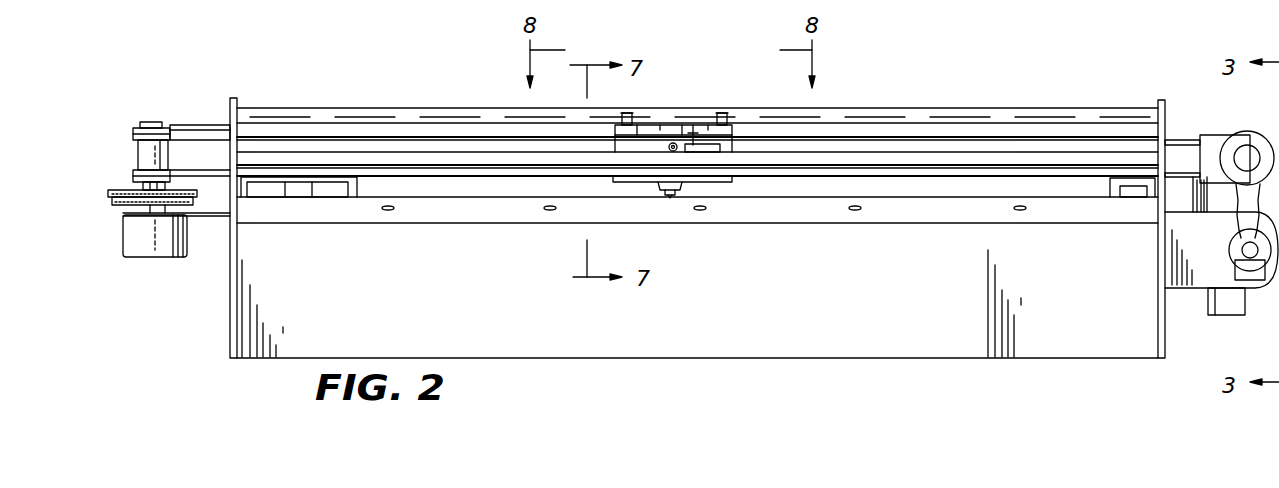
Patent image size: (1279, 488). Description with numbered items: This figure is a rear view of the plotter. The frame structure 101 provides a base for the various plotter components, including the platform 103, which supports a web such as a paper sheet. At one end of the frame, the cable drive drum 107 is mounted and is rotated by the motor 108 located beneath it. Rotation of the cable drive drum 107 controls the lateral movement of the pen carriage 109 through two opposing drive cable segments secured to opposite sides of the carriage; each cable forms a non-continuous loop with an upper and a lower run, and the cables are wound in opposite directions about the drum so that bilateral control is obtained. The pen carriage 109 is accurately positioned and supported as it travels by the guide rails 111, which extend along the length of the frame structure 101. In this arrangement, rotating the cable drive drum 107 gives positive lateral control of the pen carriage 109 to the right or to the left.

The frame structure 101 is at (230, 336).
The platform 103 is at (833, 205).
The cable drive drum 107 is at (140, 150).
The motor 108 is at (137, 250).
The pen carriage 109 is at (745, 93).
The guide rails 111 is at (917, 140).